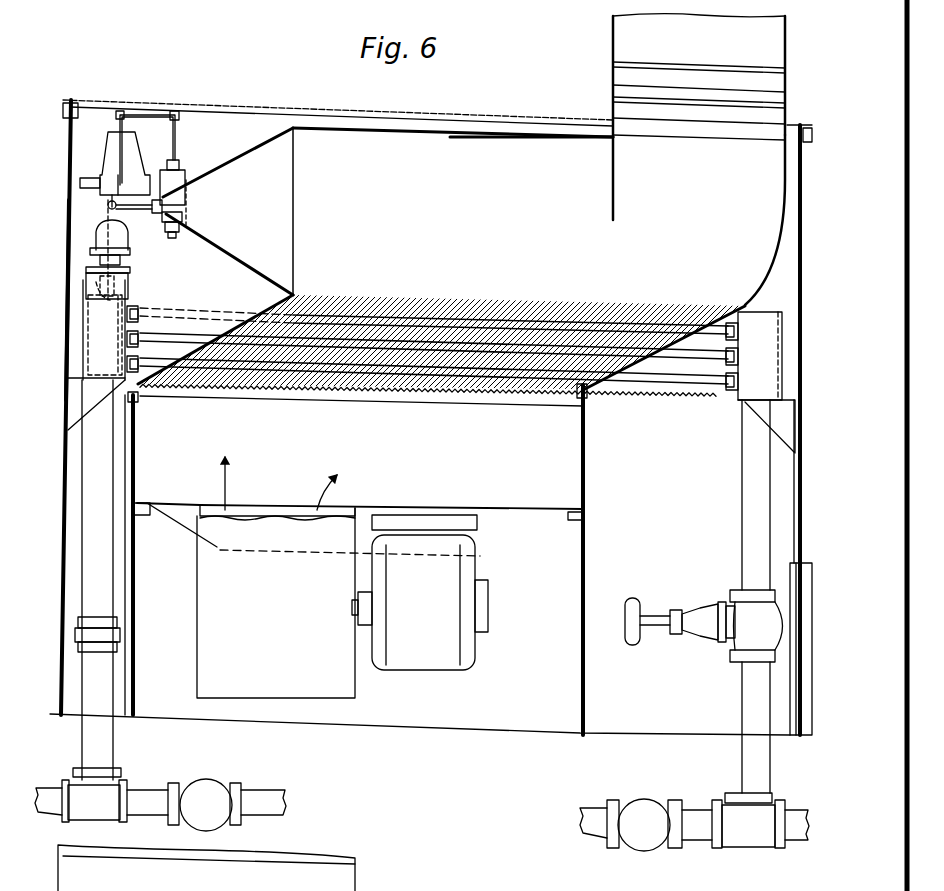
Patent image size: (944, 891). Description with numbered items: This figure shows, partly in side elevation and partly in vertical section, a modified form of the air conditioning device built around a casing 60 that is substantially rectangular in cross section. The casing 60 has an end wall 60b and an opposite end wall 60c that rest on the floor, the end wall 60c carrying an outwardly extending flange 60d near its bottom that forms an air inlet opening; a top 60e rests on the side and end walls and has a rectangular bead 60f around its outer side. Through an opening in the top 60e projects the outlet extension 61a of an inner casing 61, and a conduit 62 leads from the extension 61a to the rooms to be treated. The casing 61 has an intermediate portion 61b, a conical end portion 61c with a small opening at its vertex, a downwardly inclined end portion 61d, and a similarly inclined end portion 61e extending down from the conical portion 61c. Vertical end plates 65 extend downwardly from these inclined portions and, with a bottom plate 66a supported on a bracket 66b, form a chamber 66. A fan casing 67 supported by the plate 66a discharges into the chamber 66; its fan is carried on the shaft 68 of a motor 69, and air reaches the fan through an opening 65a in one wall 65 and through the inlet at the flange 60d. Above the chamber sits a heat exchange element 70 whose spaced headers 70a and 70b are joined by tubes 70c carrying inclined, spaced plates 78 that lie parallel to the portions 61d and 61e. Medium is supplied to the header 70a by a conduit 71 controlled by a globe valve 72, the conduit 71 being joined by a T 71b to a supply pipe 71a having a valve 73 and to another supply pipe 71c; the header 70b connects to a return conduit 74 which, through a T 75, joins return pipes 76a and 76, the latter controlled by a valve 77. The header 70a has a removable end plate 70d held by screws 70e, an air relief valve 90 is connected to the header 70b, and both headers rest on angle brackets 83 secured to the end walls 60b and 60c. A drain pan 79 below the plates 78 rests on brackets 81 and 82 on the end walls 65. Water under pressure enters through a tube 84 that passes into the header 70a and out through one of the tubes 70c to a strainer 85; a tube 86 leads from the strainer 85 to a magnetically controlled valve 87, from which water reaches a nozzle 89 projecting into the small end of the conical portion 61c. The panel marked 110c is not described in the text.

The casing 60 is at (62, 460).
The end wall 60b is at (66, 368).
The end wall 60c is at (798, 256).
The outwardly extending flange 60d is at (798, 730).
The top 60e is at (433, 118).
The rectangular bead 60f is at (823, 115).
The casing 61 is at (437, 140).
The outlet extension 61a is at (622, 128).
The intermediate portion 61b is at (540, 138).
The conical end portion 61c is at (248, 160).
The inclined end portion 61d is at (597, 388).
The inclined end portion 61e is at (262, 302).
The conduit 62 is at (613, 36).
The vertical end plate 65 is at (138, 440).
The opening 65a is at (584, 636).
The chamber 66 is at (334, 474).
The bottom plate 66a is at (478, 508).
The bracket 66b is at (567, 515).
The fan casing 67 is at (197, 622).
The shaft 68 is at (358, 612).
The motor 69 is at (455, 642).
The heat exchange element 70 is at (742, 386).
The header 70a is at (758, 318).
The header 70b is at (113, 328).
The tubes 70c is at (682, 356).
The removable end plate 70d is at (784, 336).
The screws 70e is at (786, 360).
The conduit 71 is at (745, 490).
The supply pipe 71a is at (693, 845).
The T 71b is at (730, 846).
The supply pipe 71c is at (792, 846).
The valve 72 is at (738, 628).
The valve 73 is at (646, 806).
The return conduit 74 is at (92, 532).
The T 75 is at (85, 822).
The return pipe 76 is at (143, 794).
The return pipe 76a is at (40, 790).
The valve 77 is at (208, 794).
The plates 78 is at (518, 304).
The drain pan 79 is at (300, 398).
The bracket 81 is at (580, 400).
The bracket 82 is at (139, 406).
The angle brackets 83 is at (94, 395).
The tube 84 is at (163, 312).
The strainer 85 is at (186, 180).
The tube 86 is at (138, 118).
The magnetically controlled valve 87 is at (112, 156).
The nozzle 89 is at (168, 210).
The air relief valve 90 is at (125, 244).
The panel 110c is at (206, 868).